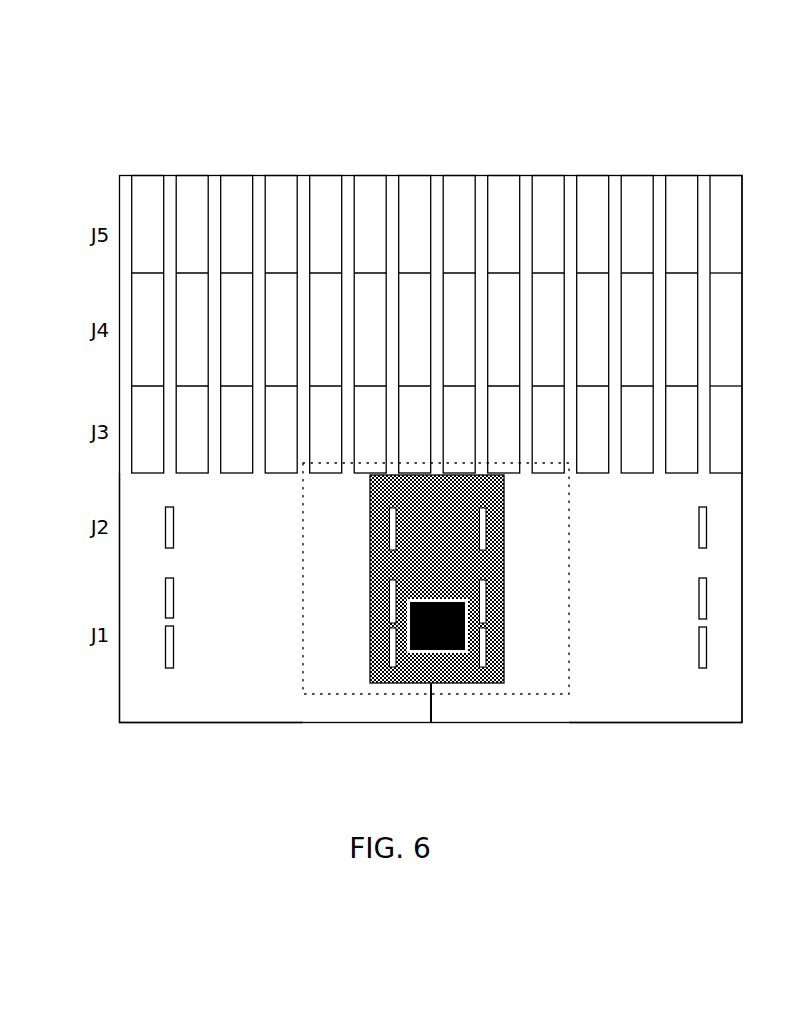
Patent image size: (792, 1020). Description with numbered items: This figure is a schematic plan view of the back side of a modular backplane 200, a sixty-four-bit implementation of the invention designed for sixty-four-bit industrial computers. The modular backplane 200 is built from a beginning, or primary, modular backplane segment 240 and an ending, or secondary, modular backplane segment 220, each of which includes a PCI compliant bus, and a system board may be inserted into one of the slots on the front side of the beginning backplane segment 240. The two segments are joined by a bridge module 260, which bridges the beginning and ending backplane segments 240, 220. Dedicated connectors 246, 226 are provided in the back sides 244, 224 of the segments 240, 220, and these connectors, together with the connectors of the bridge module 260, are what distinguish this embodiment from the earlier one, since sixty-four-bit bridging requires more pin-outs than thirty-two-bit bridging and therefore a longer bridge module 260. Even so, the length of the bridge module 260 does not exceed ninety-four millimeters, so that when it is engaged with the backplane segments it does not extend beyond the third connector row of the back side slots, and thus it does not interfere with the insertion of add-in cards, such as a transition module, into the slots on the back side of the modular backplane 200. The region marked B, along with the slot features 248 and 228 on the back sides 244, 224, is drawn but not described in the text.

The modular backplane 200 is at (408, 83).
The beginning modular backplane segment 240 is at (430, 145).
The ending modular backplane segment 220 is at (742, 145).
The back side of the beginning backplane segment 244 is at (167, 712).
The left ground slots 248 is at (174, 663).
The back side of the ending backplane segment 224 is at (590, 713).
The right ground slots 228 is at (706, 667).
The detail region B is at (303, 695).
The dedicated connector 246 is at (390, 657).
The dedicated connector 226 is at (488, 657).
The bridge module 260 is at (437, 683).